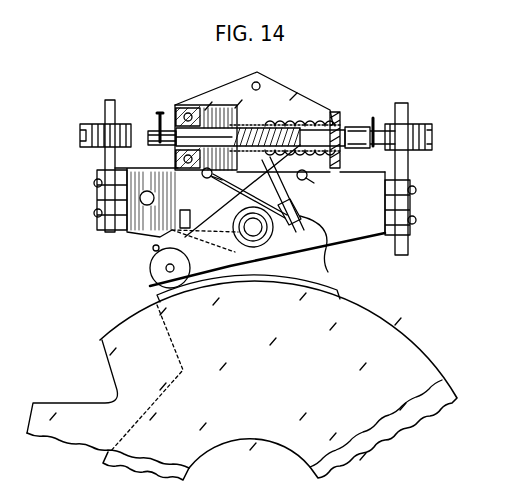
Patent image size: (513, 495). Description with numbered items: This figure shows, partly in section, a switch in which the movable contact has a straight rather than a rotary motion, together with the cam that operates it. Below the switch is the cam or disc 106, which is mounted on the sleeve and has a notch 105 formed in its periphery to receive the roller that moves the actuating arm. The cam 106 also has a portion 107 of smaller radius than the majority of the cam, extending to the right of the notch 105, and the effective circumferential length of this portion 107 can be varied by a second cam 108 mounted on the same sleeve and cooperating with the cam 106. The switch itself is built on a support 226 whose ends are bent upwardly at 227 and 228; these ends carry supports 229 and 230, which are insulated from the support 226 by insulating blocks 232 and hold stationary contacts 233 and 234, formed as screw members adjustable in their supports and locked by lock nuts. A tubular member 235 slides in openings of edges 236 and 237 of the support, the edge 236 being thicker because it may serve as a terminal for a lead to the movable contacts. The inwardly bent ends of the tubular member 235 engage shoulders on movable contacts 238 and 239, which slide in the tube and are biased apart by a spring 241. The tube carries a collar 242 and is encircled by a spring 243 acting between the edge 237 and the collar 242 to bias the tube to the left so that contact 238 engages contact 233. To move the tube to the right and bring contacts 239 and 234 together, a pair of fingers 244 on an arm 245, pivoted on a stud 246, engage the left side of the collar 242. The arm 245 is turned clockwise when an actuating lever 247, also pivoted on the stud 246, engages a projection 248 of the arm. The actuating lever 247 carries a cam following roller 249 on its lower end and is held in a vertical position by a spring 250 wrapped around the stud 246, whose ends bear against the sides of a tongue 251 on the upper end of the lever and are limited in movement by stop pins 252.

The notch 105 is at (118, 393).
The cam 106 is at (90, 428).
The portion of smaller radius 107 is at (125, 331).
The cam 108 is at (122, 457).
The support 226 is at (329, 230).
The bent end 227 is at (112, 233).
The bent end 228 is at (388, 236).
The support 229 is at (106, 105).
The support 230 is at (404, 112).
The insulating blocks 232 is at (105, 232).
The stationary contact 233 is at (82, 133).
The stationary contact 234 is at (435, 133).
The tubular member 235 is at (356, 126).
The edge 236 is at (179, 125).
The edge 237 is at (337, 112).
The movable contact 238 is at (152, 133).
The movable contact 239 is at (376, 117).
The spring 241 is at (238, 117).
The collar 242 is at (280, 117).
The spring 243 is at (288, 115).
The fingers 244 is at (274, 115).
The arm 245 is at (192, 197).
The stud 246 is at (262, 236).
The actuating lever 247 is at (153, 248).
The projection 248 is at (181, 220).
The cam following roller 249 is at (162, 280).
The spring 250 is at (328, 272).
The tongue 251 is at (295, 213).
The stop pins 252 is at (200, 175).